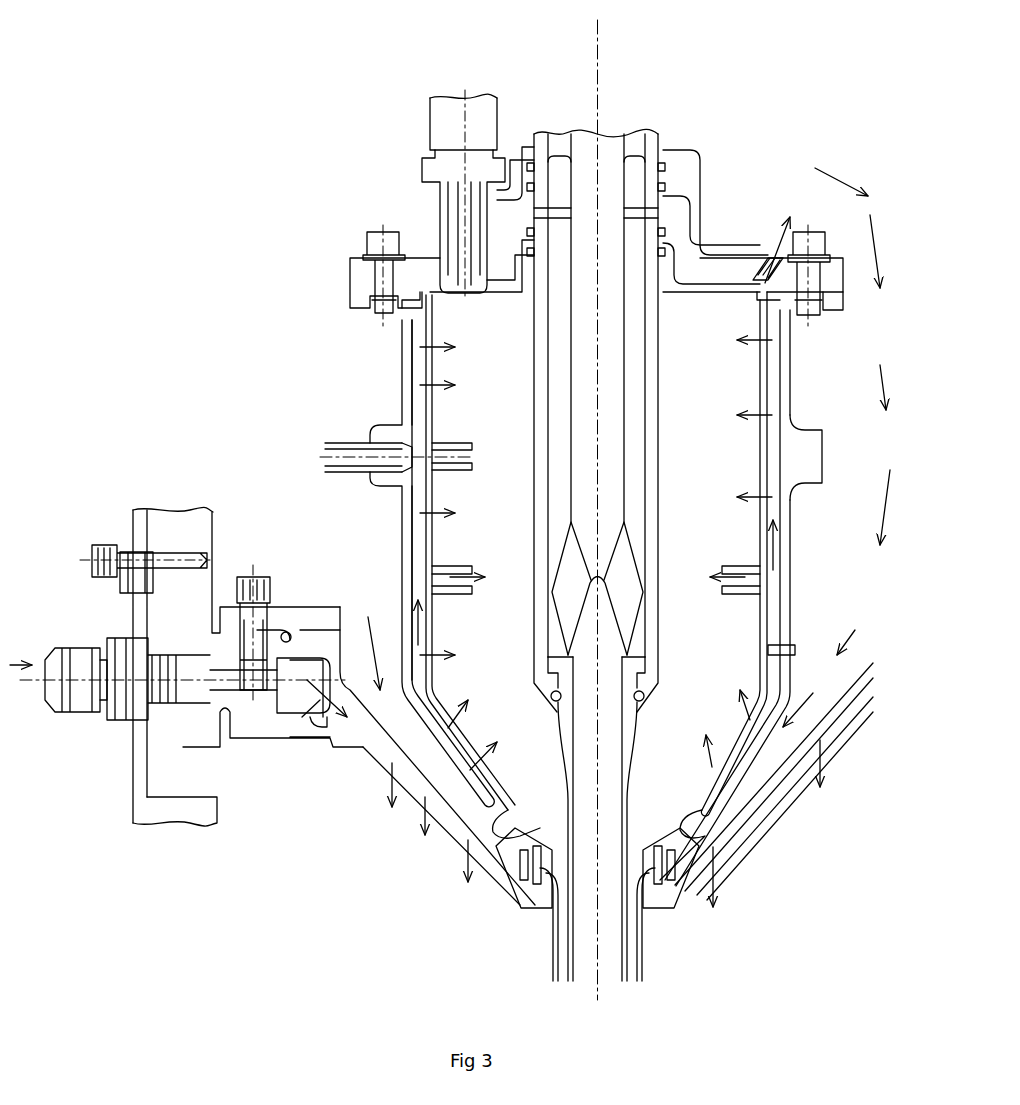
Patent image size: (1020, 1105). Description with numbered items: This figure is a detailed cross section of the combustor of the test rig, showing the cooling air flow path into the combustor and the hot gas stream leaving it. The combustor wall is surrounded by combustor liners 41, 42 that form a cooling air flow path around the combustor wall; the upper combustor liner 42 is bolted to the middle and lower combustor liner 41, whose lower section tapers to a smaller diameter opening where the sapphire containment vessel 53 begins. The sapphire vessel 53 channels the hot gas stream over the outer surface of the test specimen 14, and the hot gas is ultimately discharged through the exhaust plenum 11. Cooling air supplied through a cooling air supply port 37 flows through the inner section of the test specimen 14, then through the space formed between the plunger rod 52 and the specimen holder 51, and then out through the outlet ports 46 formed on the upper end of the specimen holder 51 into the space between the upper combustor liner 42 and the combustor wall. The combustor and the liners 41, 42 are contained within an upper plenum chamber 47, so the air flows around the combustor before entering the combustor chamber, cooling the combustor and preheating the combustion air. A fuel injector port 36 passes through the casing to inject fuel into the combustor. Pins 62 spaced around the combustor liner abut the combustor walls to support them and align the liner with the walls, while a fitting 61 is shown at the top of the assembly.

The exhaust plenum 11 is at (712, 385).
The test specimen 14 is at (627, 722).
The fuel injector port 36 is at (355, 455).
The cooling air supply port 37 is at (80, 670).
The middle and lower combustor liner 41 is at (805, 455).
The upper combustor liner 42 is at (695, 212).
The outlet ports 46 is at (660, 205).
The upper plenum chamber 47 is at (774, 219).
The specimen holder 51 is at (536, 148).
The plunger rod 52 is at (613, 153).
The sapphire containment vessel 53 is at (640, 950).
The connector fitting 61 is at (440, 125).
The pins 62 is at (787, 648).